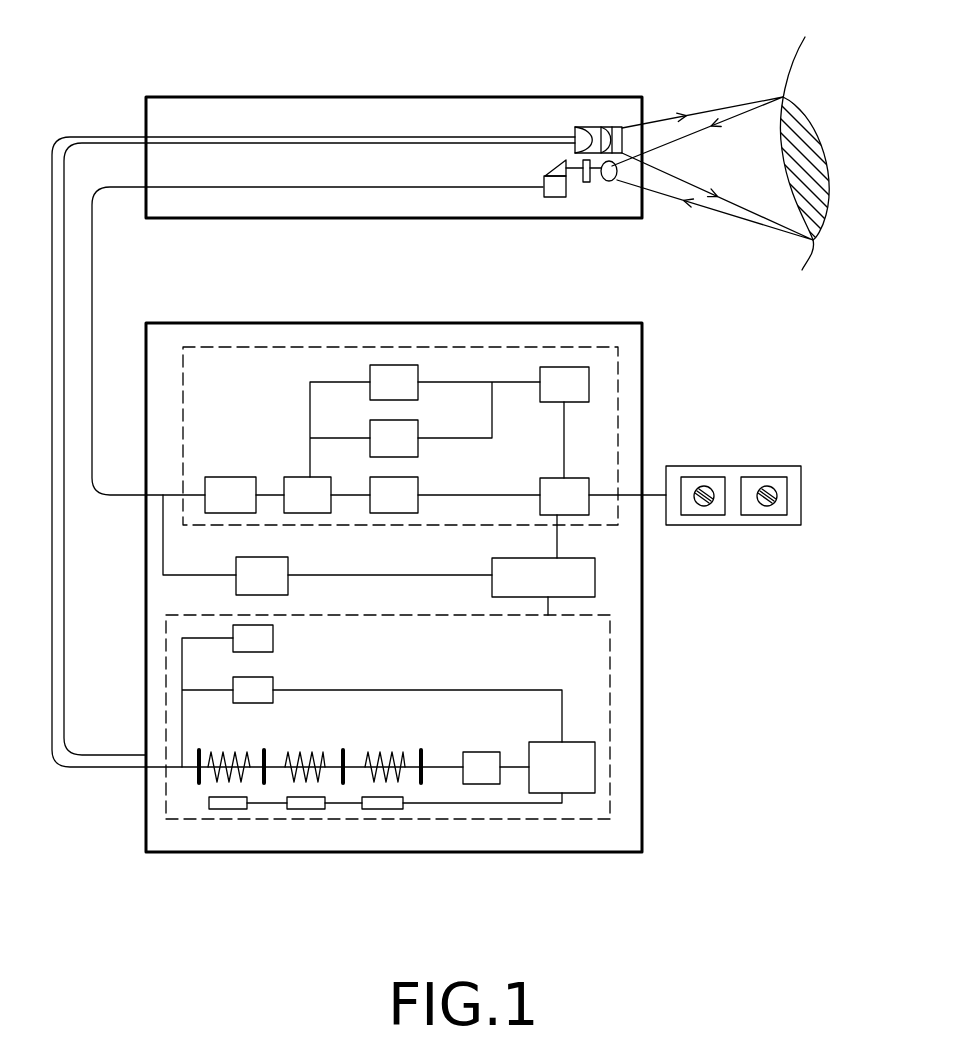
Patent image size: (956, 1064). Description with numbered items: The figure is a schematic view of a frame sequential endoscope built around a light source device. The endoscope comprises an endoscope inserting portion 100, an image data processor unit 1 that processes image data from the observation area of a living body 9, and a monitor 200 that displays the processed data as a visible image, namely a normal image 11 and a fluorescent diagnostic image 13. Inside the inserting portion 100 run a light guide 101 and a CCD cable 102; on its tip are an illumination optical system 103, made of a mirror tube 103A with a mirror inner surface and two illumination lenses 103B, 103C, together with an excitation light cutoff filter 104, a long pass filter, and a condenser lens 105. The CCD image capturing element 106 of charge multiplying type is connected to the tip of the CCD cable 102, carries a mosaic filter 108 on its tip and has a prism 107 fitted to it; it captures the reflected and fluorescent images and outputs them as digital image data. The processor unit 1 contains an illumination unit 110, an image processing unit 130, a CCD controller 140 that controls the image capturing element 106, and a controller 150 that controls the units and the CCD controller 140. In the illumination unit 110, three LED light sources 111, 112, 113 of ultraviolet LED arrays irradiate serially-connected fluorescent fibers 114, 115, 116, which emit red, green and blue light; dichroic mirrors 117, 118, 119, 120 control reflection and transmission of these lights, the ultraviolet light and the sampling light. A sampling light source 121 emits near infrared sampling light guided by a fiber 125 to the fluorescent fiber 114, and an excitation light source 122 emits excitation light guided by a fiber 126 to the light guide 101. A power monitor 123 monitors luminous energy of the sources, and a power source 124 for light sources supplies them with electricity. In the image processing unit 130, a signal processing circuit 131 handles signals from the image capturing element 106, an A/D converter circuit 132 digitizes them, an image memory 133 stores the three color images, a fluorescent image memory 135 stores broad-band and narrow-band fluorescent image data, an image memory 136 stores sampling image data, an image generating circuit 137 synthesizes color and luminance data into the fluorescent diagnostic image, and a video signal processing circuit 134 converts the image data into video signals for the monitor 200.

The image data processor unit 1 is at (642, 400).
The living body 9 is at (807, 103).
The normal image 11 is at (703, 512).
The fluorescent diagnostic image 13 is at (766, 512).
The endoscope inserting portion 100 is at (275, 90).
The light guide 101 is at (368, 137).
The CCD cable 102 is at (304, 187).
The illumination optical system 103 is at (605, 128).
The mirror tube 103A is at (600, 136).
The illumination lens 103B is at (576, 133).
The illumination lens 103C is at (613, 130).
The excitation light cutoff filter 104 is at (591, 184).
The condenser lens 105 is at (636, 204).
The CCD image capturing element 106 is at (548, 198).
The prism 107 is at (548, 169).
The mosaic filter 108 is at (581, 184).
The illumination unit 110 is at (612, 648).
The LED light source 111 is at (375, 809).
The LED light source 112 is at (305, 809).
The LED light source 113 is at (230, 809).
The fluorescent fiber 114 is at (382, 752).
The fluorescent fiber 115 is at (302, 752).
The fluorescent fiber 116 is at (228, 752).
The dichroic mirror 117 is at (422, 750).
The dichroic mirror 118 is at (343, 750).
The dichroic mirror 119 is at (264, 750).
The dichroic mirror 120 is at (199, 750).
The sampling light source 121 is at (482, 752).
The excitation light source 122 is at (274, 690).
The power monitor 123 is at (274, 640).
The power source for light sources 124 is at (583, 742).
The fiber 125 is at (446, 765).
The fiber 126 is at (210, 690).
The image processing unit 130 is at (643, 366).
The signal processing circuit 131 is at (242, 477).
The A/D converter circuit 132 is at (296, 477).
The image memory 133 is at (419, 481).
The video signal processing circuit 134 is at (554, 478).
The fluorescent image memory 135 is at (420, 428).
The image memory 136 is at (420, 373).
The image generating circuit 137 is at (545, 403).
The CCD controller 140 is at (288, 559).
The controller 150 is at (513, 558).
The monitor 200 is at (713, 466).